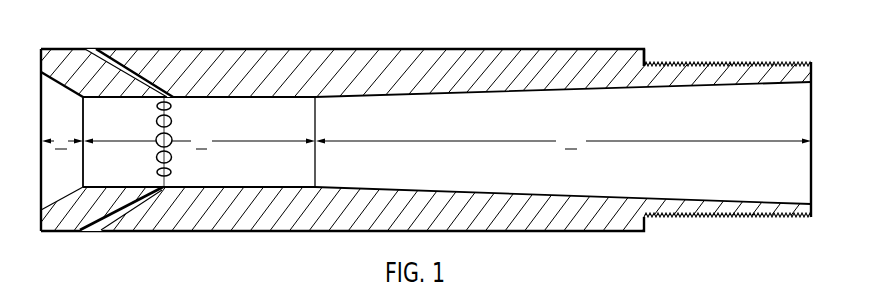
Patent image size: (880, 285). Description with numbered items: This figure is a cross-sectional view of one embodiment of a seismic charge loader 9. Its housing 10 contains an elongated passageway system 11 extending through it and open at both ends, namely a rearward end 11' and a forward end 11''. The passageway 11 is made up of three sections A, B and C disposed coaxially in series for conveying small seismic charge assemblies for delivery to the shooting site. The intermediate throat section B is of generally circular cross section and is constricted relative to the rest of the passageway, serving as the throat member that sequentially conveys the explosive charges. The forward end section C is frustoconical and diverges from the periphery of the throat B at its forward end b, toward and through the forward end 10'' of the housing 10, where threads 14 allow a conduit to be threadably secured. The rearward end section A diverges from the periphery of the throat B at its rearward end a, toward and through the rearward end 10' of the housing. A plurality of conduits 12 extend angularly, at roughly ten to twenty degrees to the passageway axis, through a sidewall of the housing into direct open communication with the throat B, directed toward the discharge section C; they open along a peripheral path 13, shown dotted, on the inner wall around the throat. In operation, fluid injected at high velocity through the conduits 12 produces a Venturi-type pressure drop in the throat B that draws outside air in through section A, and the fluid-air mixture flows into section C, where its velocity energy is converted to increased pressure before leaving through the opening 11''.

The seismic charge loader 9 is at (372, 48).
The housing 10 is at (428, 130).
The rearward end of housing 10' is at (45, 202).
The forward end of housing 10'' is at (830, 191).
The passageway system 11 is at (447, 112).
The rearward end of passageway 11' is at (45, 141).
The forward end of passageway 11'' is at (820, 101).
The conduits 12 is at (97, 52).
The peripheral path 13 is at (166, 181).
The threads 14 is at (723, 64).
The rearward end of throat a is at (83, 186).
The forward end of throat b is at (316, 187).
The rearward end section A is at (62, 141).
The throat section B is at (199, 141).
The forward end section C is at (563, 141).